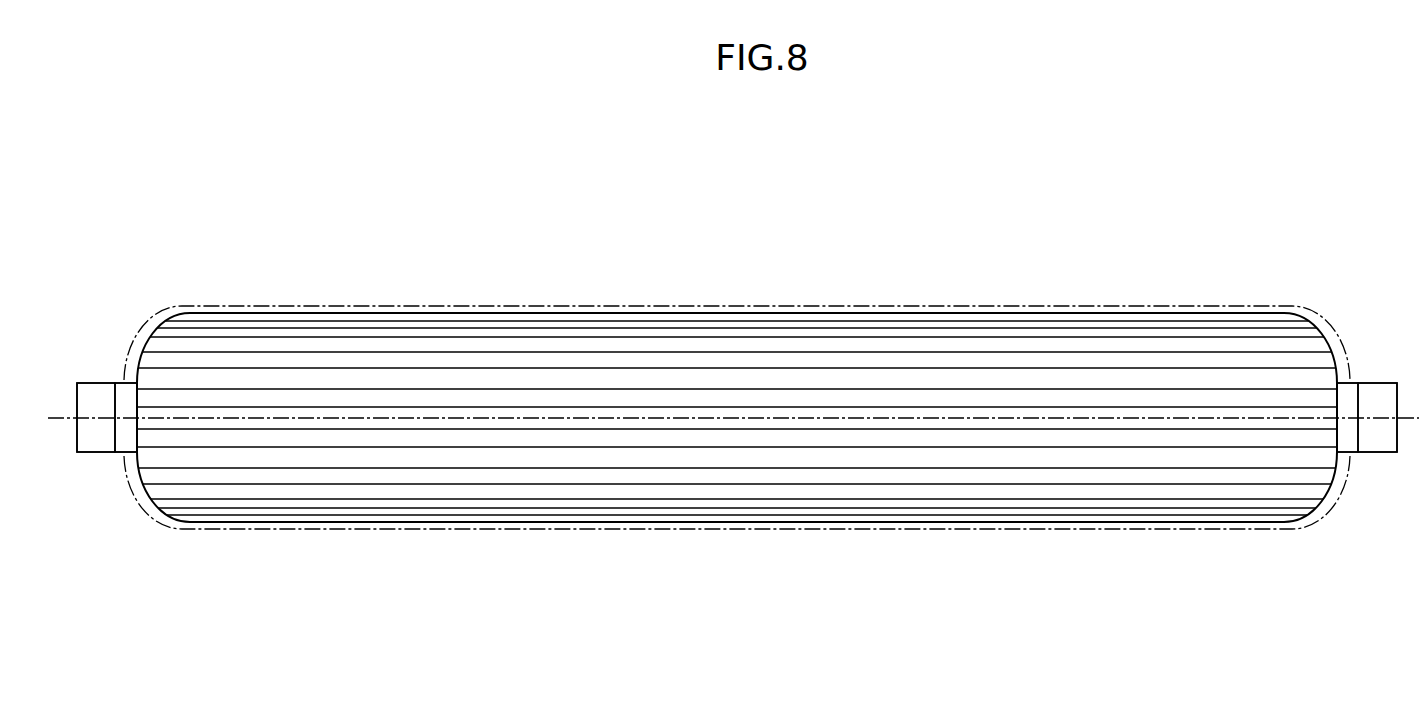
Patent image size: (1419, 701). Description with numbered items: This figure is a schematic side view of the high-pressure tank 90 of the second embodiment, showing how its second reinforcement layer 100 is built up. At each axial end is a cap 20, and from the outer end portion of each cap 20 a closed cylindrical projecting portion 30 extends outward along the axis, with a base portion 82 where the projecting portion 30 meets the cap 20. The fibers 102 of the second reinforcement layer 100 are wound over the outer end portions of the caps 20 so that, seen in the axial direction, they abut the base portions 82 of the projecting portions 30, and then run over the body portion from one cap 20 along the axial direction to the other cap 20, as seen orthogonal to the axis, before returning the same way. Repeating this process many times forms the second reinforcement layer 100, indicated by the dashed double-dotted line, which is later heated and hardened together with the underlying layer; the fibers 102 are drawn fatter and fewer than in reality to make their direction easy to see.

The cap 20 is at (66, 452).
The projecting portion 30 is at (92, 390).
The base portion 82 is at (128, 388).
The high-pressure tank 90 is at (777, 257).
The second reinforcement layer 100 is at (1033, 305).
The fibers 102 is at (1318, 407).